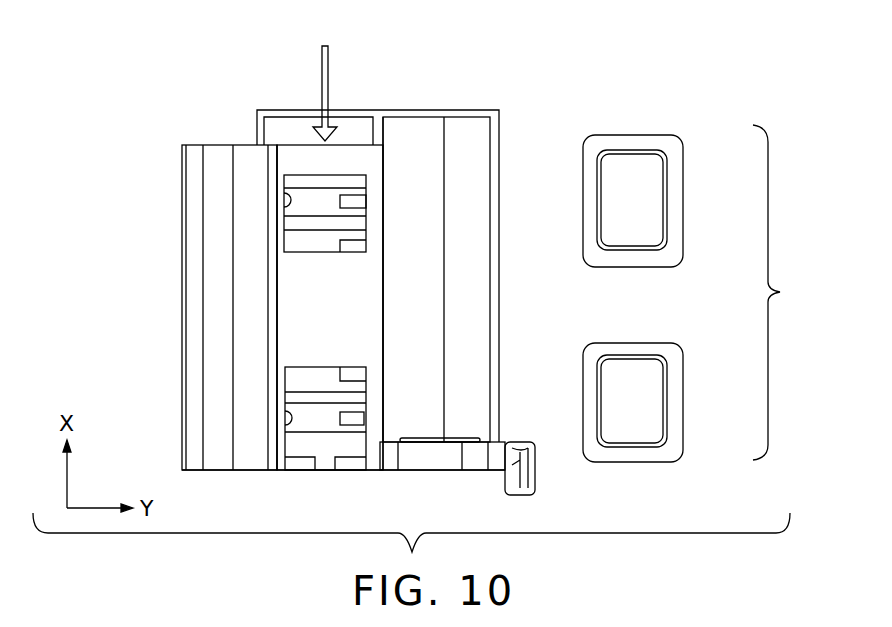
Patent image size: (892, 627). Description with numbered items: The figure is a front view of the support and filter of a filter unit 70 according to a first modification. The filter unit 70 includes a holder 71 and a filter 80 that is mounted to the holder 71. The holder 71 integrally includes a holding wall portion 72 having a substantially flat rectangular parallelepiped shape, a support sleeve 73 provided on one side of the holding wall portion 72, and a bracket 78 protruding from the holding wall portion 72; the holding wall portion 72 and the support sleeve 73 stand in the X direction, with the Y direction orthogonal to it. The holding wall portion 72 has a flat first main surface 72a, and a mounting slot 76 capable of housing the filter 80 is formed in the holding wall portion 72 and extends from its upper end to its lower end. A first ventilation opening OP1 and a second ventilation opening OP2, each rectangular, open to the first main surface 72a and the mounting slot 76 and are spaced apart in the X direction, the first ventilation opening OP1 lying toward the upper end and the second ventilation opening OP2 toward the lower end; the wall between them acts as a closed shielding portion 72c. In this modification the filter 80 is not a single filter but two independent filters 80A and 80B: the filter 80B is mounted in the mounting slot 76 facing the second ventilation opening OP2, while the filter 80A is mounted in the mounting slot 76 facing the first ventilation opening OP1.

The filter unit 70 is at (423, 95).
The holder 71 is at (418, 198).
The holding wall portion 72 is at (342, 338).
The first main surface 72a is at (305, 297).
The shielding portion 72c is at (357, 280).
The support sleeve 73 is at (213, 258).
The mounting slot 76 is at (303, 143).
The bracket 78 is at (447, 451).
The filter 80 is at (782, 292).
The filter 80A is at (684, 202).
The filter 80B is at (684, 393).
The first ventilation opening OP1 is at (283, 208).
The second ventilation opening OP2 is at (285, 425).